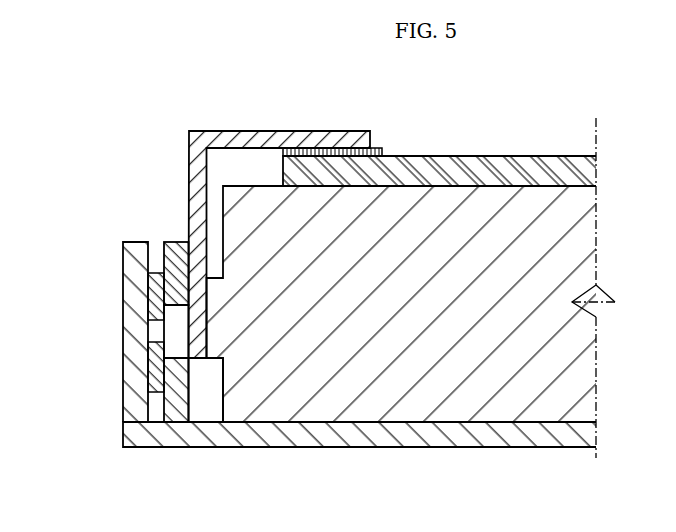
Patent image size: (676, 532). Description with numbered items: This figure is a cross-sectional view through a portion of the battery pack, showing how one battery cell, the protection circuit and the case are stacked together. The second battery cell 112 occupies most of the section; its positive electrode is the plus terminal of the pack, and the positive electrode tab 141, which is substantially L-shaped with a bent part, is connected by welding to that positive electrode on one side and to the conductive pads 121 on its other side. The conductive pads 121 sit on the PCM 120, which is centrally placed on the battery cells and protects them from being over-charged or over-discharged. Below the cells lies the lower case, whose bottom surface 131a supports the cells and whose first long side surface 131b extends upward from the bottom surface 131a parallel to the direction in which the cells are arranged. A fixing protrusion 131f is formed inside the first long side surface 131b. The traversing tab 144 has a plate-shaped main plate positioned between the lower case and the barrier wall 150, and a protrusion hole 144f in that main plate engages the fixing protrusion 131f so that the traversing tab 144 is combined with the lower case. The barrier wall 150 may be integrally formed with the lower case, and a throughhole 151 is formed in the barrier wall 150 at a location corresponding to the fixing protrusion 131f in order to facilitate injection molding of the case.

The second battery cell 112 is at (455, 405).
The PCM 120 is at (488, 160).
The conductive pads 121 is at (376, 148).
The positive electrode tab 141 is at (275, 131).
The traversing tab 144 is at (158, 273).
The protrusion holes 144f is at (157, 337).
The bottom surface 131a is at (320, 440).
The first long side surface 131b is at (137, 393).
The fixing protrusions 131f is at (160, 333).
The barrier wall 150 is at (177, 405).
The throughholes 151 is at (178, 343).